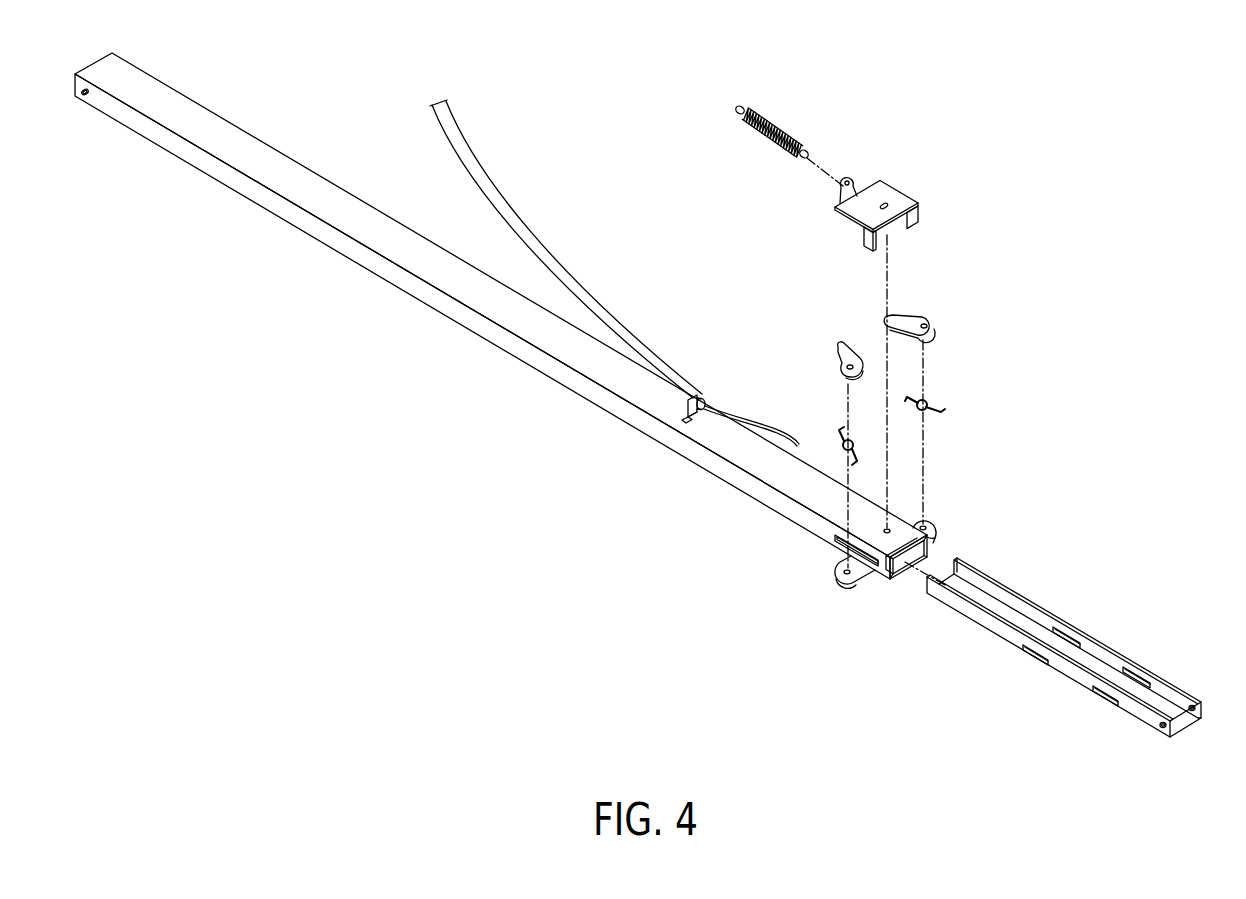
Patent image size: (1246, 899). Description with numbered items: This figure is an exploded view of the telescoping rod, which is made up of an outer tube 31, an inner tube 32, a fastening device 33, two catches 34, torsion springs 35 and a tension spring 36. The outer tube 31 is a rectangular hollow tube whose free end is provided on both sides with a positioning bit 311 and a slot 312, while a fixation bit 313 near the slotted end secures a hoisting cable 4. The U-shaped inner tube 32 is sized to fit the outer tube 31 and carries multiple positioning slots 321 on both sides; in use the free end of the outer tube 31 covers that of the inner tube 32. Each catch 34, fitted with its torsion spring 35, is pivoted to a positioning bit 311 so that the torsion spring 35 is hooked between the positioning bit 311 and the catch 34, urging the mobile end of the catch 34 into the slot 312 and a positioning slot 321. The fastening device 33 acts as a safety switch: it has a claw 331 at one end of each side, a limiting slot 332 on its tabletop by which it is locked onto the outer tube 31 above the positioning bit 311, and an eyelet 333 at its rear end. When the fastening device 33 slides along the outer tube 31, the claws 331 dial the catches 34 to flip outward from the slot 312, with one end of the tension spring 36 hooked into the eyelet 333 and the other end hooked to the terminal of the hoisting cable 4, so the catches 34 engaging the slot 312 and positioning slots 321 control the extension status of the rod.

The hoisting cable 4 is at (488, 196).
The outer tube 31 is at (525, 354).
The positioning bit 311 is at (935, 530).
The slot 312 is at (838, 543).
The fixation bit 313 is at (697, 395).
The inner tube 32 is at (1083, 680).
The positioning slots 321 is at (1063, 628).
The fastening device 33 is at (873, 300).
The claw 331 is at (918, 222).
The limiting slot 332 is at (884, 204).
The eyelet 333 is at (840, 184).
The catch 34 is at (915, 318).
The torsion spring 35 is at (935, 405).
The tension spring 36 is at (765, 112).